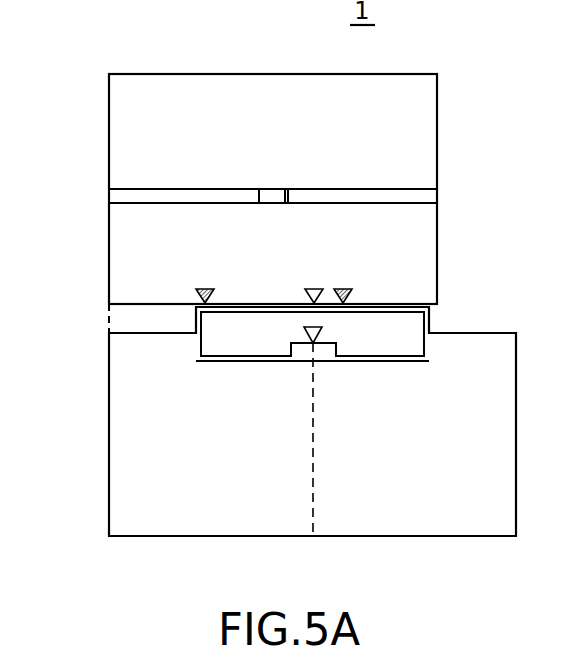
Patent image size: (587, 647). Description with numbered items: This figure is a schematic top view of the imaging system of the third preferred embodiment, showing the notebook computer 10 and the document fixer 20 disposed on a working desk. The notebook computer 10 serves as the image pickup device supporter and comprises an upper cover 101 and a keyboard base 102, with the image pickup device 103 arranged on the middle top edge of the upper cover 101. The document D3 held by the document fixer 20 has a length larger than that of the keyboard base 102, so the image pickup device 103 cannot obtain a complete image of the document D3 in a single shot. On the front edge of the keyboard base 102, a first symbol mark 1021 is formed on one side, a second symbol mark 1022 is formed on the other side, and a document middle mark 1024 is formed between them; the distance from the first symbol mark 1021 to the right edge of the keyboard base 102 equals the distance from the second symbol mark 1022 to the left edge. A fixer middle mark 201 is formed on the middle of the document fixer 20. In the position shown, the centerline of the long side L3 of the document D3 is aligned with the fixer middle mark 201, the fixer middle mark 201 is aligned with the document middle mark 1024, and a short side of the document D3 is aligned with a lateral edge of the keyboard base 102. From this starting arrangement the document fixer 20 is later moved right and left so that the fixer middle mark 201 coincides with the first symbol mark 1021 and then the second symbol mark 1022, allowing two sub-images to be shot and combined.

The notebook computer 10 is at (211, 74).
The upper cover 101 is at (416, 130).
The keyboard base 102 is at (125, 278).
The image pickup device 103 is at (272, 196).
The first symbol mark 1021 is at (343, 288).
The second symbol mark 1022 is at (205, 288).
The document middle mark 1024 is at (314, 288).
The document fixer 20 is at (416, 340).
The fixer middle mark 201 is at (305, 330).
The long side L3 is at (190, 536).
The document D3 is at (395, 522).